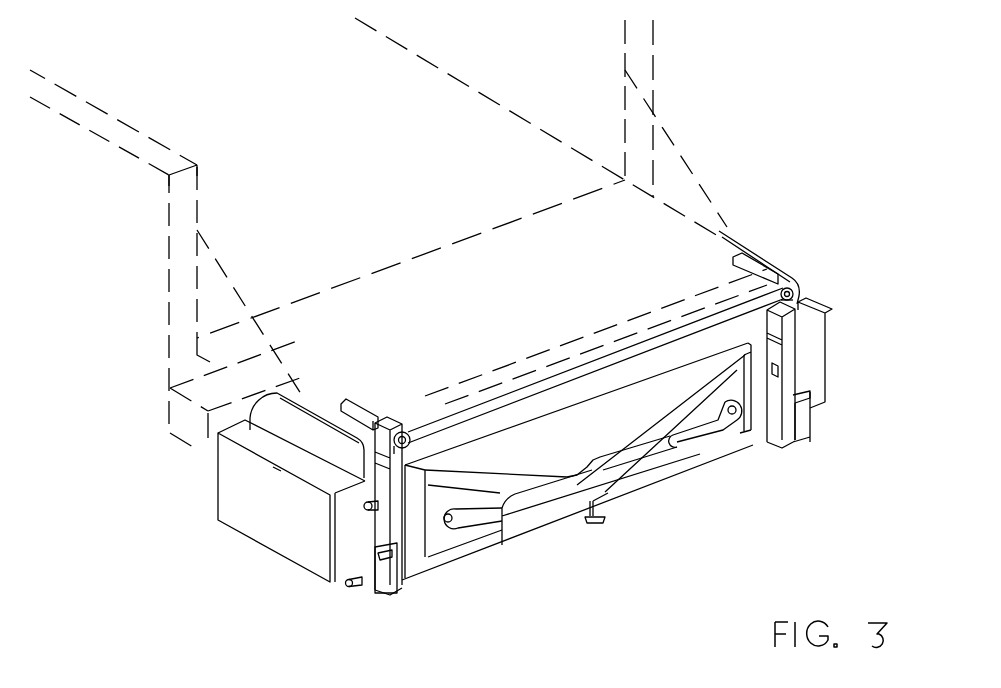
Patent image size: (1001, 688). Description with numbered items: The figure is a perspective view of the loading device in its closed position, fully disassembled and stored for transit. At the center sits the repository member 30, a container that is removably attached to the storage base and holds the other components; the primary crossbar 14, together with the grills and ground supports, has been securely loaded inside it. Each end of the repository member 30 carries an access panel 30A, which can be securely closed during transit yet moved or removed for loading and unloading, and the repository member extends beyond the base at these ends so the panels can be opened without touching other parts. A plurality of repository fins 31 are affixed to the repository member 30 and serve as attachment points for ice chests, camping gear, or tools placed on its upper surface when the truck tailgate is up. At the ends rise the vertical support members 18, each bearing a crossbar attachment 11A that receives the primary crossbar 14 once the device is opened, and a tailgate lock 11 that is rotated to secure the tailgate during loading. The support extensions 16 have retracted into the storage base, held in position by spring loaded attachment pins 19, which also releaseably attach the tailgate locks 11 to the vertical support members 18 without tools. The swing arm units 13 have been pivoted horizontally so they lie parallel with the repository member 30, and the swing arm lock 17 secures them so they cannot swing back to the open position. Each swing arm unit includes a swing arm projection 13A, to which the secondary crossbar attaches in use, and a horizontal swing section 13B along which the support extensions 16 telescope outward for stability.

The tailgate lock 11 is at (351, 406).
The crossbar attachment 11A is at (403, 431).
The swing arm unit 13 is at (565, 528).
The swing arm projection 13A is at (467, 532).
The horizontal swing section 13B is at (478, 540).
The primary crossbar 14 is at (547, 383).
The support extension 16 is at (389, 585).
The swing arm lock 17 is at (600, 496).
The vertical support member 18 is at (399, 525).
The spring loaded attachment pin 19 is at (349, 587).
The repository member 30 is at (583, 399).
The access panel 30A is at (240, 500).
The repository fin 31 is at (310, 430).